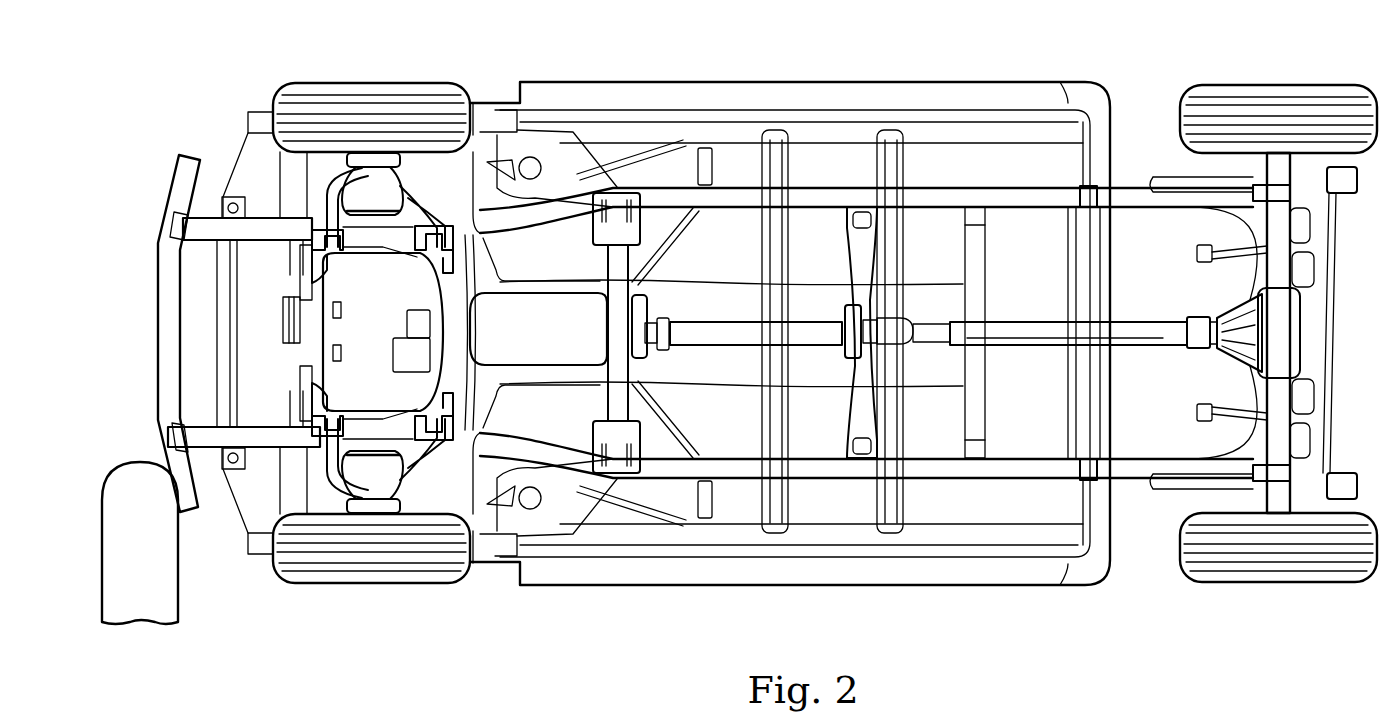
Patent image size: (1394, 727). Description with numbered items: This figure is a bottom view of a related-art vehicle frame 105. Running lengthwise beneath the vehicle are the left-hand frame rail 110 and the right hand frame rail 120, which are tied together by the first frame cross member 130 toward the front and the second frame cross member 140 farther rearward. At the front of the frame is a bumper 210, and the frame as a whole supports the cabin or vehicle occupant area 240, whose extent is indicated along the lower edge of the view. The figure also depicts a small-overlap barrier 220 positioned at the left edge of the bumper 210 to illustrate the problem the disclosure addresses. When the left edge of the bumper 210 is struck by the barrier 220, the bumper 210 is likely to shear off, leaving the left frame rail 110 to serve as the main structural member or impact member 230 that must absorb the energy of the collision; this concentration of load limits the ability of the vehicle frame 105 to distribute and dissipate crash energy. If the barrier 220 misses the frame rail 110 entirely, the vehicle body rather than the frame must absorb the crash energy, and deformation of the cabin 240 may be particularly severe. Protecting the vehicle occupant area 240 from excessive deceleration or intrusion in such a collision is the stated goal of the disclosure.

The vehicle frame 105 is at (178, 48).
The left-hand frame rail 110 is at (267, 437).
The right hand frame rail 120 is at (262, 232).
The No. 1 frame cross member 130 is at (303, 258).
The No. 2 frame cross member 140 is at (455, 325).
The bumper 210 is at (157, 257).
The SOL barrier 220 is at (100, 558).
The impact member 230 is at (168, 416).
The vehicle occupant area 240 is at (497, 598).